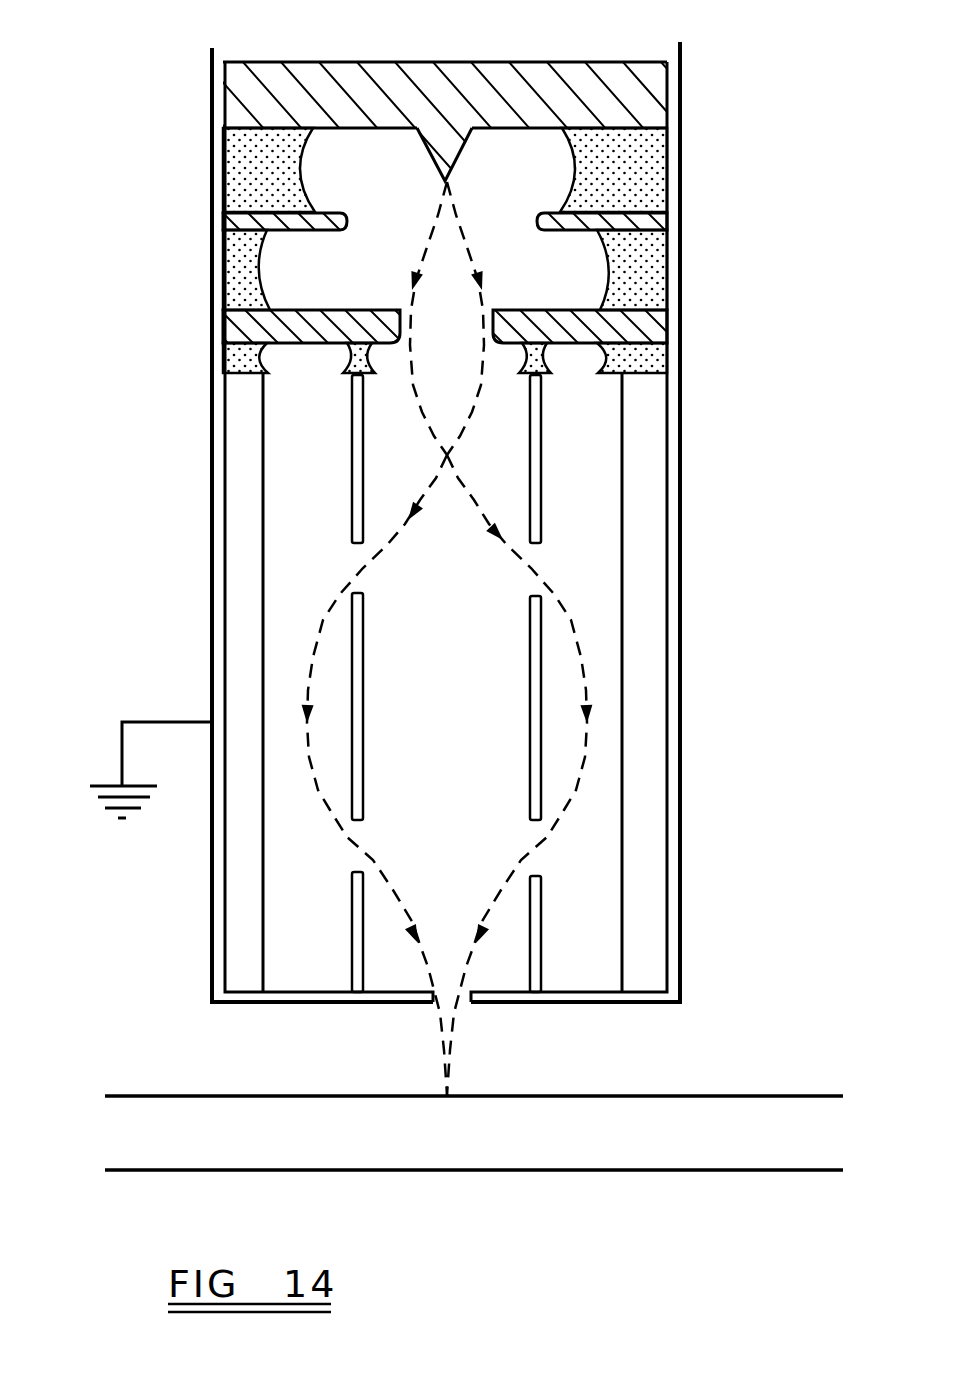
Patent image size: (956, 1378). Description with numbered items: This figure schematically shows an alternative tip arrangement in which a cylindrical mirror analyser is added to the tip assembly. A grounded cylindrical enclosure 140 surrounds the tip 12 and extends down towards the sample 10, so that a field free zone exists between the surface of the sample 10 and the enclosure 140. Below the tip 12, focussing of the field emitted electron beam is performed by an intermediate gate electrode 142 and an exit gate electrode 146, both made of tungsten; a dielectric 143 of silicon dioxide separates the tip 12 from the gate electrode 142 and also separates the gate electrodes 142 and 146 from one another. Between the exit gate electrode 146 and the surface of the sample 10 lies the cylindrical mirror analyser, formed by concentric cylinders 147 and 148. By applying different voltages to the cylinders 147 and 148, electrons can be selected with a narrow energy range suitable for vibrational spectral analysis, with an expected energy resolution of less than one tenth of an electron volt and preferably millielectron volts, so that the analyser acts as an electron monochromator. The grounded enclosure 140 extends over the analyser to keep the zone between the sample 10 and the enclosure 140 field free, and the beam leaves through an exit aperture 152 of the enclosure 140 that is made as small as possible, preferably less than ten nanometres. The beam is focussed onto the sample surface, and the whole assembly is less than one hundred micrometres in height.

The sample 10 is at (689, 1120).
The tip 12 is at (452, 163).
The grounded cylindrical enclosure 140 is at (211, 143).
The intermediate gate electrode 142 is at (660, 220).
The dielectric 143 is at (260, 185).
The exit gate electrode 146 is at (660, 328).
The concentric cylinder 147 is at (653, 510).
The concentric cylinder 148 is at (539, 700).
The exit aperture 152 is at (450, 1003).